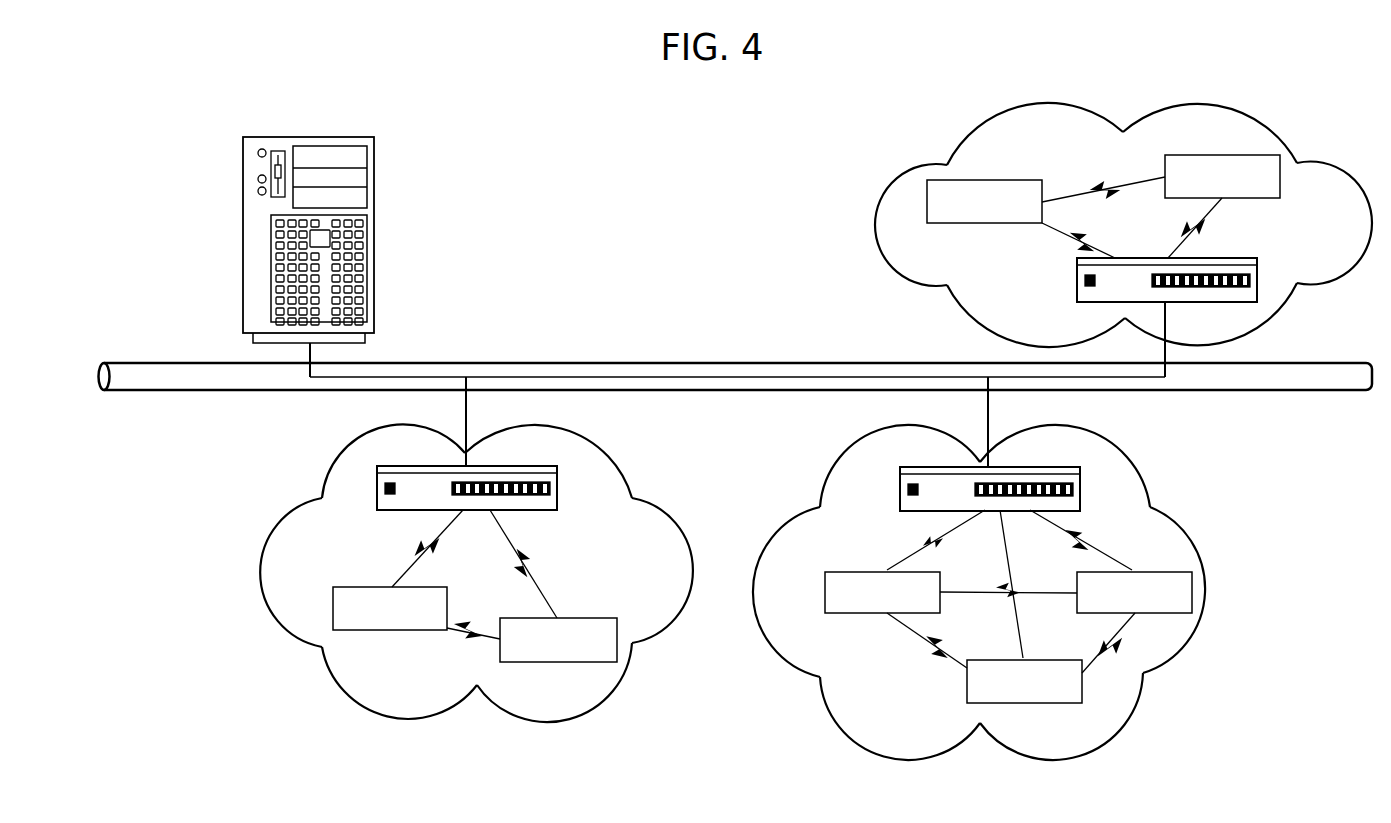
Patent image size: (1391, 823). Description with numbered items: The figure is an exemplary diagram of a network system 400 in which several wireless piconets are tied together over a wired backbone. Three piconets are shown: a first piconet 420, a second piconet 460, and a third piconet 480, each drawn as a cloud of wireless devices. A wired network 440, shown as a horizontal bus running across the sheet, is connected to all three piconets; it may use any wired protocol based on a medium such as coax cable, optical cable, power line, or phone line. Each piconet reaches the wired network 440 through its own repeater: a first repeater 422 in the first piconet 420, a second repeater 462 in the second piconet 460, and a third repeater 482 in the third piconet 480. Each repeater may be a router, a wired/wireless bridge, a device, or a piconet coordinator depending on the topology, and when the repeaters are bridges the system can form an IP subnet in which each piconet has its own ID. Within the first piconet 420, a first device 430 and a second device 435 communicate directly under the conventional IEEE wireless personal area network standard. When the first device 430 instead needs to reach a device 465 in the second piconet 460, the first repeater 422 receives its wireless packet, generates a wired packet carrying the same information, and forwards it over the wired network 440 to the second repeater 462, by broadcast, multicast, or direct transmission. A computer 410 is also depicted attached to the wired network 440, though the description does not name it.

The network system 400 is at (120, 155).
The management server computer 410 is at (309, 137).
The wired network 440 is at (568, 363).
The first piconet 420 is at (476, 564).
The first repeater 422 is at (557, 487).
The device-1_1 430 is at (333, 604).
The device-1_2 435 is at (562, 618).
The second piconet 460 is at (979, 592).
The second repeater 462 is at (1080, 487).
The device-2_1 465 is at (825, 583).
The third piconet 480 is at (1089, 225).
The third repeater 482 is at (1077, 293).